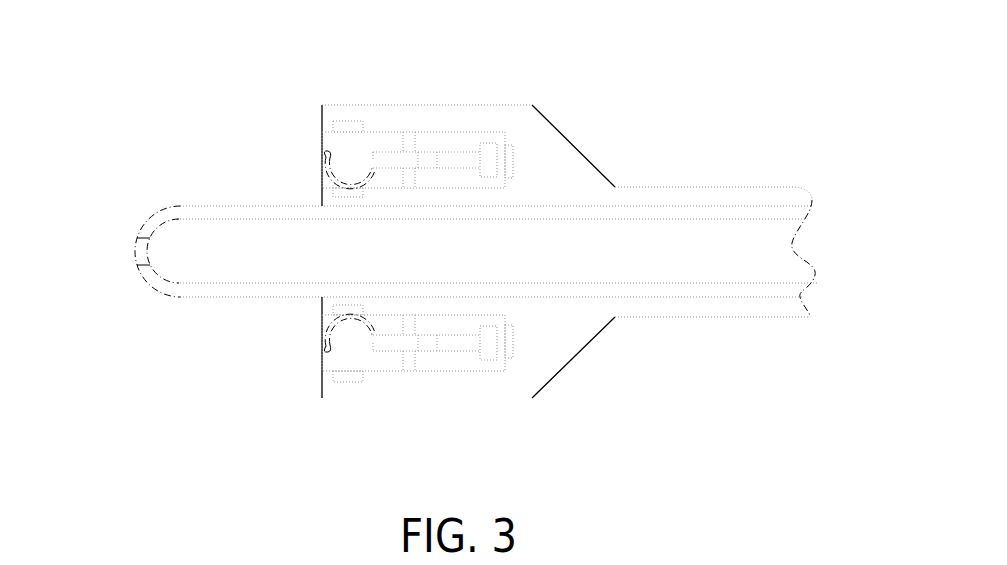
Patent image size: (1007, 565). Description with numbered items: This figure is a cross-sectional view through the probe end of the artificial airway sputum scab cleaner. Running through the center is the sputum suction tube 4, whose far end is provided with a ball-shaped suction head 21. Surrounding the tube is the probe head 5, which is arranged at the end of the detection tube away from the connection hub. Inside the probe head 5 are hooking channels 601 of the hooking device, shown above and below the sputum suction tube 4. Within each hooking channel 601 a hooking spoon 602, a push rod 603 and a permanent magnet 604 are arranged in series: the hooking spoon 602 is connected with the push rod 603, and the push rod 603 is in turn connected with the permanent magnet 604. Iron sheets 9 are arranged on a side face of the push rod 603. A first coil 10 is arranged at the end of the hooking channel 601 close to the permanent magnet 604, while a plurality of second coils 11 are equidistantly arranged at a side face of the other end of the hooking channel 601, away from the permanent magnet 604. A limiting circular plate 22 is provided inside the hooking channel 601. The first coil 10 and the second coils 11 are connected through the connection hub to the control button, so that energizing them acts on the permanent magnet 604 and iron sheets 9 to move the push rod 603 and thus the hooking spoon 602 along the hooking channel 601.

The sputum suction tube 4 is at (265, 288).
The ball-shaped suction head 21 is at (148, 272).
The probe head 5 is at (565, 172).
The hooking channel 601 is at (470, 140).
The iron sheets 9 is at (428, 157).
The hooking spoon 602 is at (326, 158).
The second coils 11 is at (348, 375).
The limiting circular plate 22 is at (410, 365).
The push rod 603 is at (455, 342).
The permanent magnet 604 is at (492, 352).
The first coil 10 is at (508, 348).